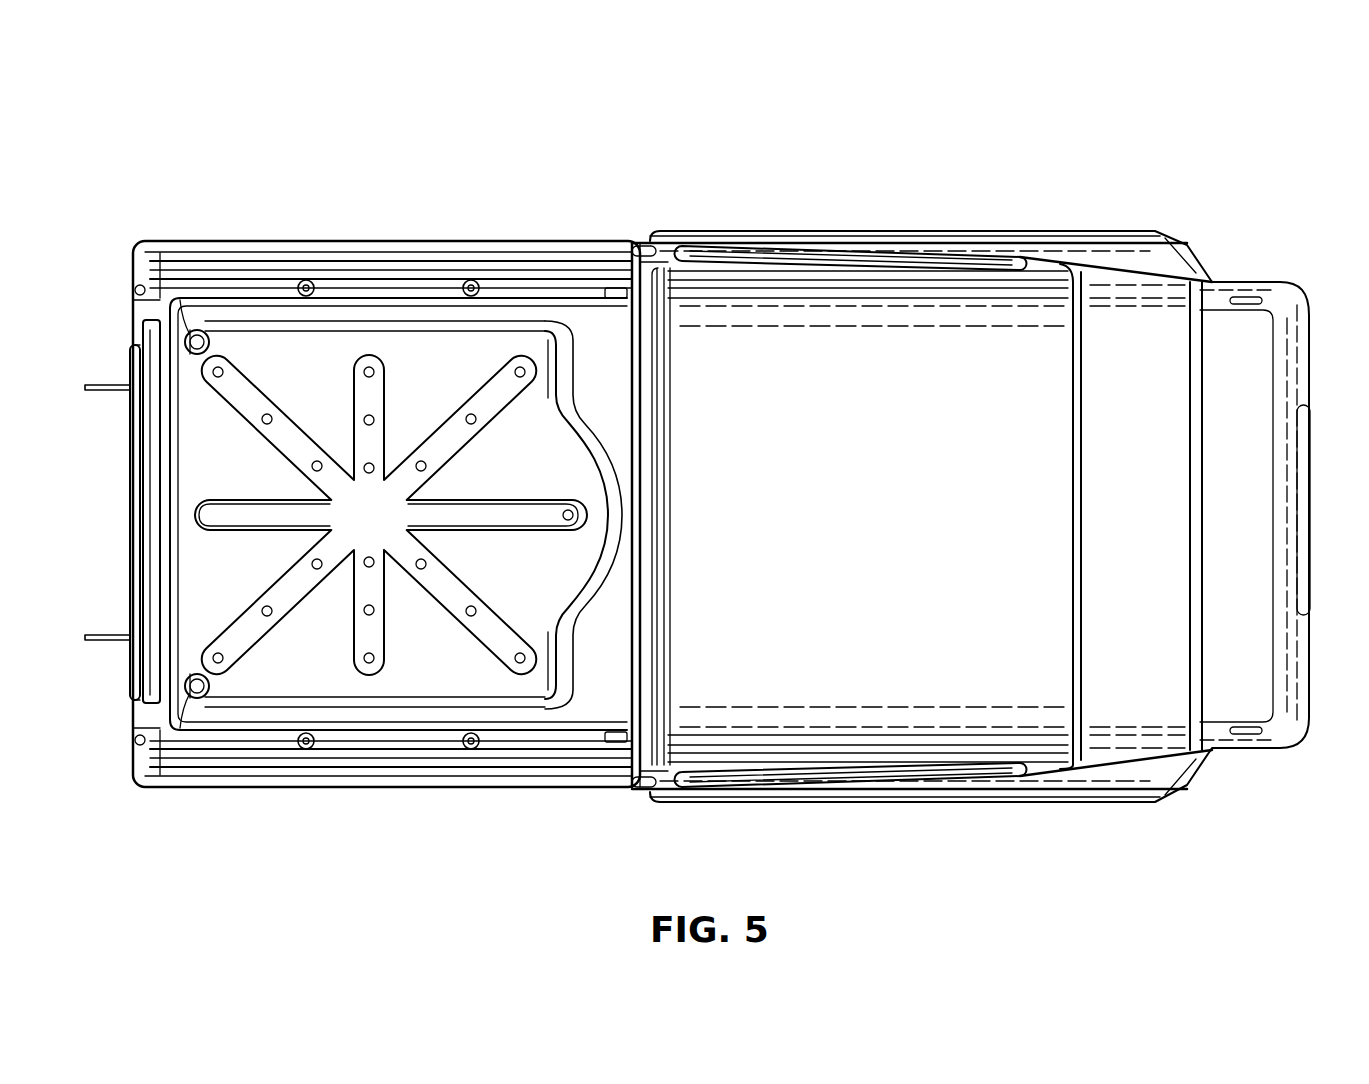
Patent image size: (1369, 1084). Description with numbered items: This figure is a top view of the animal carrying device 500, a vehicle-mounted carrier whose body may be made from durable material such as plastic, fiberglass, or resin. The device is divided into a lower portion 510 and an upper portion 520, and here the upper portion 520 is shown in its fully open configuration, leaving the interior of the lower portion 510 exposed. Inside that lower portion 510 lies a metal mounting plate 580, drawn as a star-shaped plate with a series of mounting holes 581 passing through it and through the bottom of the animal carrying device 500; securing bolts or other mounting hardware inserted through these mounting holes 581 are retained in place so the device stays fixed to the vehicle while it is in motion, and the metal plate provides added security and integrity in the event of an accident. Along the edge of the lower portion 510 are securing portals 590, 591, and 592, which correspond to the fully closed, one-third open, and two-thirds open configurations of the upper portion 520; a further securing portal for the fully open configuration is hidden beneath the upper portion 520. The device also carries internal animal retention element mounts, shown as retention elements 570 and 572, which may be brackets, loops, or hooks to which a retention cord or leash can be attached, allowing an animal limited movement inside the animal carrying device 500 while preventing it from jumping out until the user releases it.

The animal carrying device 500 is at (1224, 167).
The lower portion 510 is at (590, 257).
The upper portion 520 is at (1047, 733).
The retention element 570 is at (197, 698).
The retention element 572 is at (200, 330).
The mounting plate 580 is at (380, 656).
The mounting holes 581 is at (426, 468).
The securing portal 590 is at (150, 265).
The securing portal 591 is at (310, 283).
The securing portal 592 is at (476, 280).